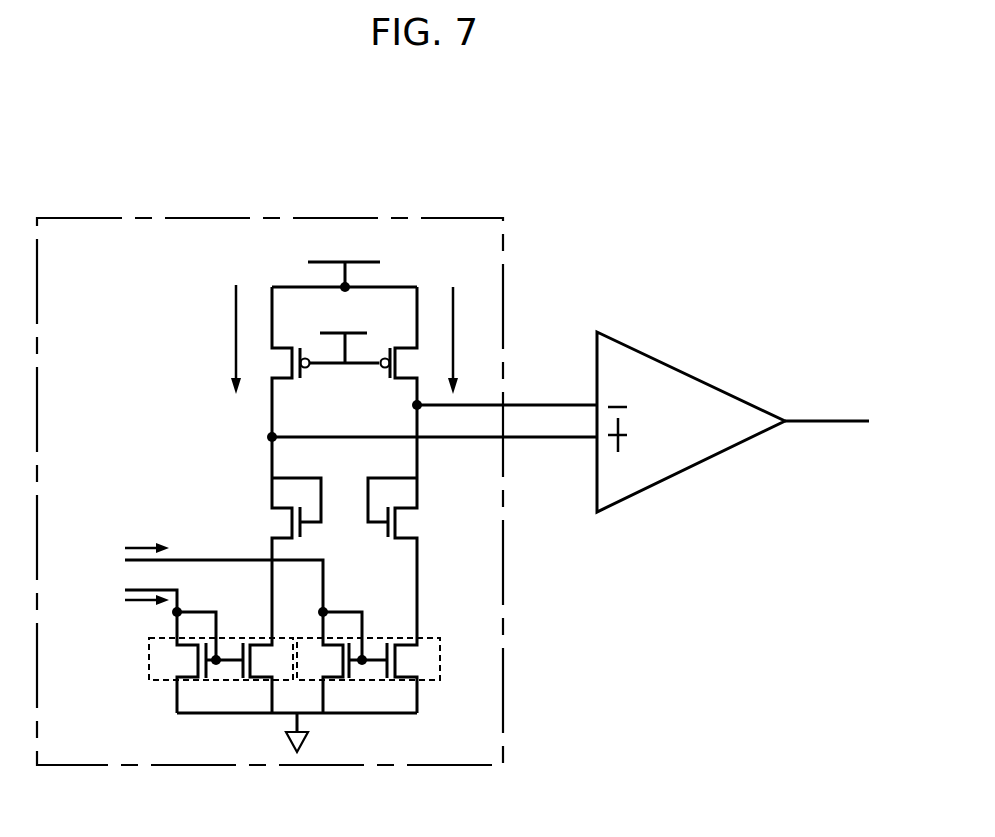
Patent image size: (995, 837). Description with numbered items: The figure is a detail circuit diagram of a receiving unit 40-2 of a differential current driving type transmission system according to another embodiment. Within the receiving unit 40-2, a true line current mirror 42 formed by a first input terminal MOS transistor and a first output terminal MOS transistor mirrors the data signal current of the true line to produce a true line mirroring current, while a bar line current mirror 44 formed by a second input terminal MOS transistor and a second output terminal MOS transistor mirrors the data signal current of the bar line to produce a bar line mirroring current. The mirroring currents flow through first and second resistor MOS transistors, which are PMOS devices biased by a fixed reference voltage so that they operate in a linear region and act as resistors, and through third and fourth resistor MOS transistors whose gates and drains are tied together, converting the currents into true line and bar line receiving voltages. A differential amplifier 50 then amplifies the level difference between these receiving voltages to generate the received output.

The receiver / current comparison circuit 40-2 is at (463, 218).
The true line current mirror 42 is at (442, 662).
The bar line current mirror 44 is at (148, 659).
The differential amplifier 50 is at (690, 468).